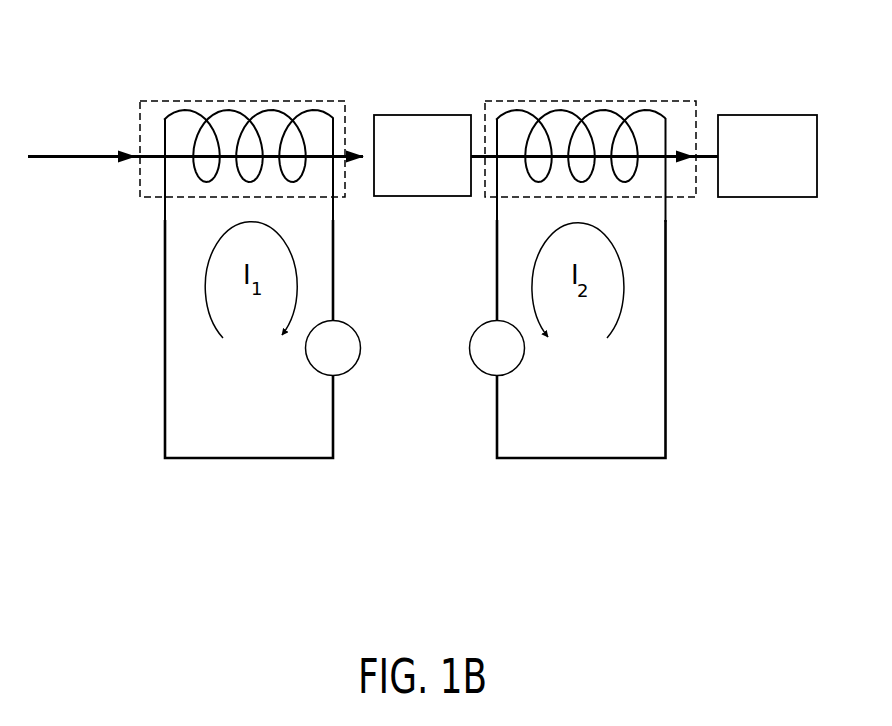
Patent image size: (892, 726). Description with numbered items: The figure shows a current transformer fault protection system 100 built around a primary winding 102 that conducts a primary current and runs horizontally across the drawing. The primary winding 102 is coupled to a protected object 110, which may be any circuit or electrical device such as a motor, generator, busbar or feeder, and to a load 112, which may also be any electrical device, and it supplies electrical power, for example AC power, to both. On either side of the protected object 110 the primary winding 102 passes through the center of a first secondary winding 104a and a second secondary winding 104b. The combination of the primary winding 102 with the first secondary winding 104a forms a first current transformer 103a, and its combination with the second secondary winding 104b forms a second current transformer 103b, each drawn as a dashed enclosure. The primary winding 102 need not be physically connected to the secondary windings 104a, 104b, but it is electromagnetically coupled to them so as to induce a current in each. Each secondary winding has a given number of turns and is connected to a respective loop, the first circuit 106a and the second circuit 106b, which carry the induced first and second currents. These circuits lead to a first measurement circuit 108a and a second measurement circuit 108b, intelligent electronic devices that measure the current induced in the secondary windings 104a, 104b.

The current transformer fault protection system 100 is at (424, 543).
The primary winding 102 is at (80, 160).
The first current transformer 103a is at (173, 98).
The second current transformer 103b is at (655, 98).
The first secondary winding 104a is at (227, 110).
The second secondary winding 104b is at (602, 112).
The first circuit 106a is at (253, 459).
The second circuit 106b is at (577, 459).
The first measurement circuit 108a is at (349, 373).
The second measurement circuit 108b is at (482, 373).
The protected object 110 is at (423, 112).
The load 112 is at (768, 114).